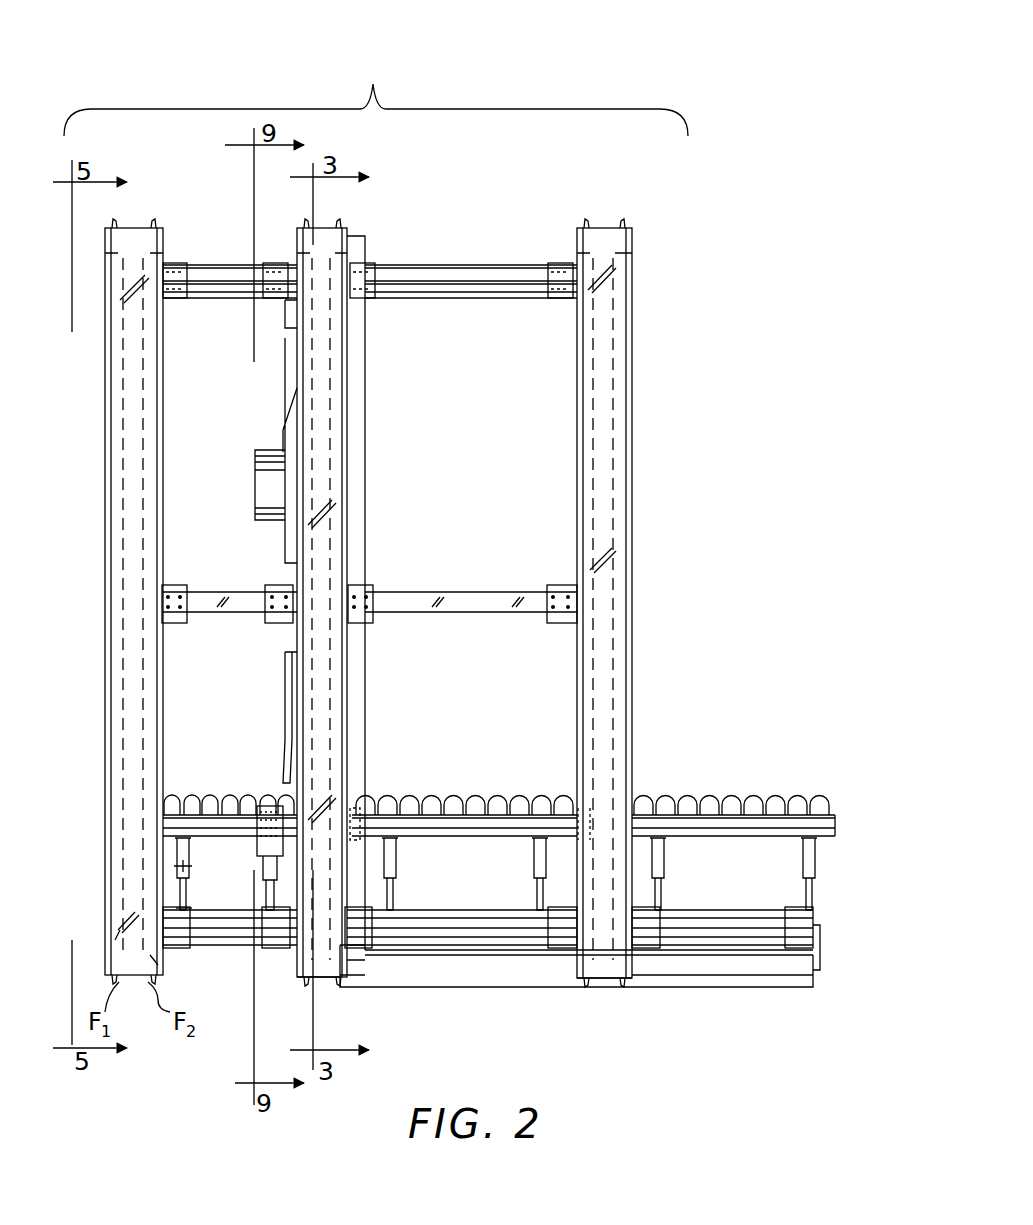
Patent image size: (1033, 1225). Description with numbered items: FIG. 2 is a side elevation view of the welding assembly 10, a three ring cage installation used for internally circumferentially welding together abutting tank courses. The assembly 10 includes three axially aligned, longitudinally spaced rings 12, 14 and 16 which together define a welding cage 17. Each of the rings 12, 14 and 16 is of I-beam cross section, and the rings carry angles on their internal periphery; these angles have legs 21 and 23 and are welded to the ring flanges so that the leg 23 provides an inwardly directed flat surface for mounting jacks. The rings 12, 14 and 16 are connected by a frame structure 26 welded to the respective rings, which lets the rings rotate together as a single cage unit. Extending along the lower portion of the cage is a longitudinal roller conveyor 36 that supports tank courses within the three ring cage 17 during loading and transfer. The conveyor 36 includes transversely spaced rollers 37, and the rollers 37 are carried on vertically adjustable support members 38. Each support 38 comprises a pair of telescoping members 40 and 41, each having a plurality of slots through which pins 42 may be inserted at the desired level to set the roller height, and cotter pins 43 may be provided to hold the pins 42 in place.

The welding assembly 10 is at (640, 57).
The ring 12 is at (142, 214).
The ring 14 is at (360, 222).
The ring 16 is at (600, 212).
The welding cage 17 is at (376, 90).
The leg 21 is at (119, 935).
The leg 23 is at (160, 963).
The frame structure 26 is at (502, 998).
The longitudinal roller conveyor 36 is at (770, 782).
The rollers 37 is at (187, 795).
The vertically adjustable support members 38 is at (165, 848).
The telescoping member 40 is at (180, 894).
The telescoping member 41 is at (189, 846).
The pin 42 is at (175, 865).
The cotter pin 43 is at (194, 866).